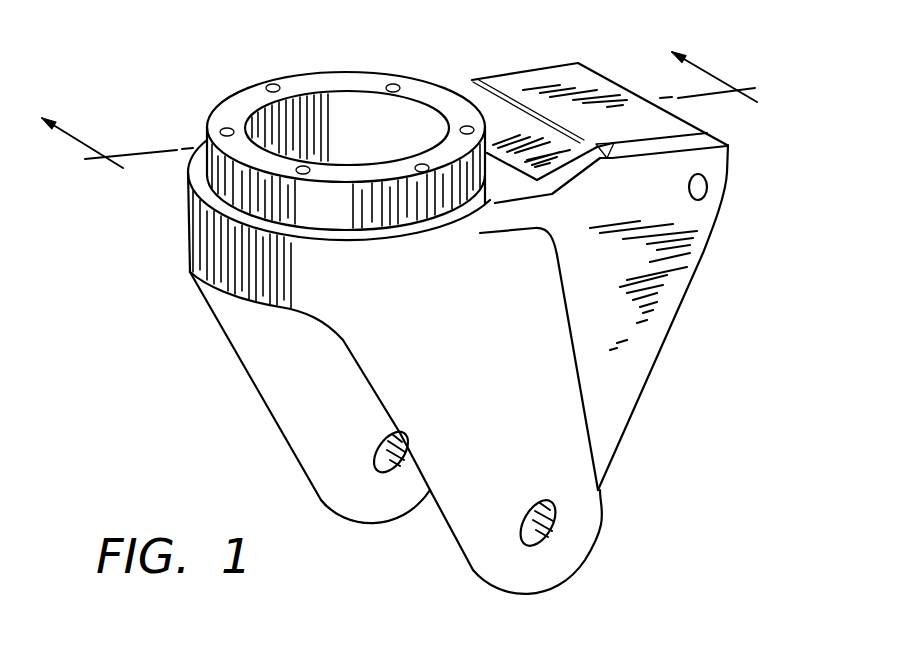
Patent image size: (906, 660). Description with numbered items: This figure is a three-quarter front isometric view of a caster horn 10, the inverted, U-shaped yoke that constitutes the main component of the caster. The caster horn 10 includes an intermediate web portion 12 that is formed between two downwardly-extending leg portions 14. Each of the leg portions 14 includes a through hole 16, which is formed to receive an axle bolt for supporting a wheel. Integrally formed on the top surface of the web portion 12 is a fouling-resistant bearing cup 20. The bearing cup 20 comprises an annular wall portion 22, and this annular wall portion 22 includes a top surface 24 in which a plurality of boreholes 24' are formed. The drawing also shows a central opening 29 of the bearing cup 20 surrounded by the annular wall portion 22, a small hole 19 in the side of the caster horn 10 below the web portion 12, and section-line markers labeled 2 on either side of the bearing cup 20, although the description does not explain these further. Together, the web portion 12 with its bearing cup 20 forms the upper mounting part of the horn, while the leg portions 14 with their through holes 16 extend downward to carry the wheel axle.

The section line 2- 2 is at (391, 90).
The caster horn 10 is at (480, 381).
The web portion 12 is at (530, 82).
The leg portions 14 is at (503, 557).
The through hole 16 is at (385, 438).
The hole 19 is at (708, 186).
The bearing cup 20 is at (372, 147).
The annular wall portion 22 is at (227, 192).
The top surface 24 is at (346, 99).
The boreholes 24' is at (347, 94).
The bore 29 is at (408, 113).